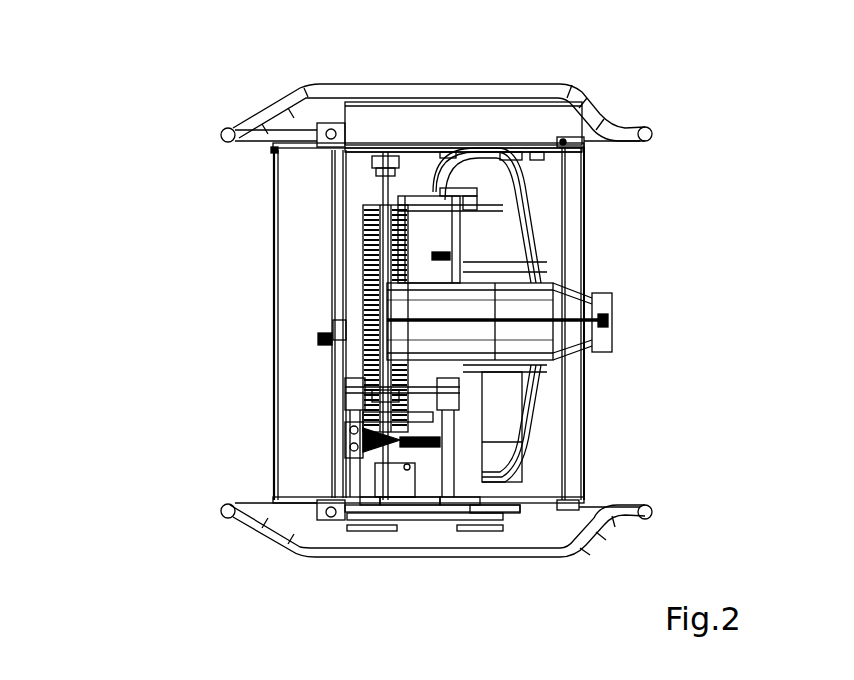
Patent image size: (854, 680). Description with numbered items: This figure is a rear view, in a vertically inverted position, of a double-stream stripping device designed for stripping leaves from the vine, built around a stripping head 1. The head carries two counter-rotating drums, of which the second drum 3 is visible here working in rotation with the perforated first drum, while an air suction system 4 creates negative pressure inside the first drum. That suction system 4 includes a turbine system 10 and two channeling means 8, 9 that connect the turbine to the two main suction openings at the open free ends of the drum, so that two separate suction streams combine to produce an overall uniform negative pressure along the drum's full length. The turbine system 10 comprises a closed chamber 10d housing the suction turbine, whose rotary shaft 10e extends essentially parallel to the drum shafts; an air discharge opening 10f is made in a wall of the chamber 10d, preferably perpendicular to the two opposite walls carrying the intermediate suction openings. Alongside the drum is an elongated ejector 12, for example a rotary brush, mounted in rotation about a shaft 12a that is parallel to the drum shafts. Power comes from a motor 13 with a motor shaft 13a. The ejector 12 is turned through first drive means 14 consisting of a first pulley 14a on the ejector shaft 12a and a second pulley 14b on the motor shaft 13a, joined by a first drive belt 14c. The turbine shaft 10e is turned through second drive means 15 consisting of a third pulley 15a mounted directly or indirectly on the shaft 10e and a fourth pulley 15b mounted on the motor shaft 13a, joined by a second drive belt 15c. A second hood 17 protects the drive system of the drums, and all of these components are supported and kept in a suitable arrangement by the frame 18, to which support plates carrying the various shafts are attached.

The stripping head 1 is at (183, 99).
The second drum 3 is at (430, 230).
The air suction system 4 is at (553, 146).
The channeling means 8 is at (515, 212).
The channeling means 9 is at (512, 415).
The turbine system 10 is at (575, 274).
The closed chamber 10d is at (515, 312).
The turbine shaft 10e is at (480, 527).
The air discharge opening 10f is at (628, 332).
The ejector 12 is at (366, 262).
The ejector shaft 12a is at (380, 180).
The motor 13 is at (418, 500).
The motor shaft 13a is at (397, 530).
The first drive means 14 is at (312, 536).
The first pulley 14a is at (363, 533).
The second pulley 14b is at (397, 480).
The first drive belt 14c is at (457, 525).
The second drive means 15 is at (455, 547).
The third pulley 15a is at (497, 530).
The fourth pulley 15b is at (395, 528).
The second drive belt 15c is at (383, 528).
The second hood 17 is at (445, 112).
The frame 18 is at (350, 305).